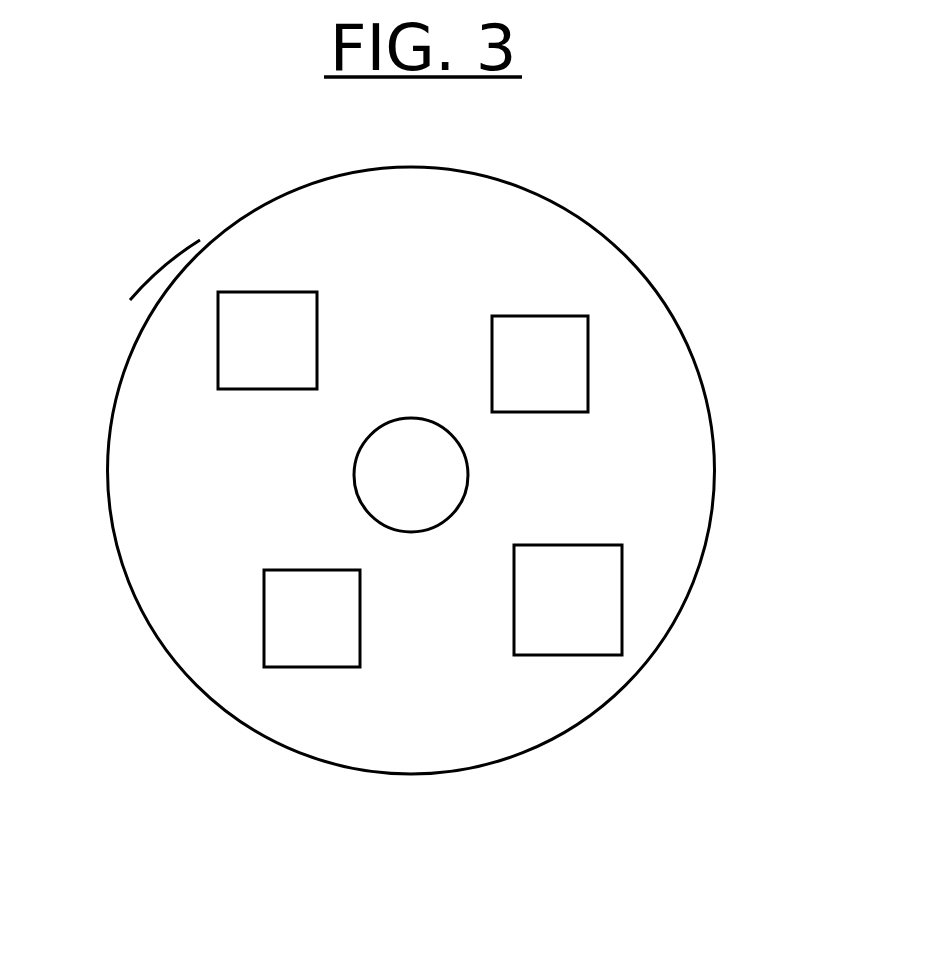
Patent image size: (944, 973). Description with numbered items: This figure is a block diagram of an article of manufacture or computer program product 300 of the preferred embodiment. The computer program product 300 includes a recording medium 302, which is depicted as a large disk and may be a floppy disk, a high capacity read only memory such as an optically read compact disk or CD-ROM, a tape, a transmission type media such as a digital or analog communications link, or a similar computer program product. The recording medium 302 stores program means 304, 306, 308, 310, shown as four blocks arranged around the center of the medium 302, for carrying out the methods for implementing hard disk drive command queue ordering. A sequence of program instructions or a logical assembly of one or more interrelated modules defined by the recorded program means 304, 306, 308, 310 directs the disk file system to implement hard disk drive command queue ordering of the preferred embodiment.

The computer program product 300 is at (676, 264).
The recording medium 302 is at (157, 292).
The program means 304 is at (312, 618).
The program means 306 is at (568, 600).
The program means 308 is at (540, 364).
The program means 310 is at (267, 340).